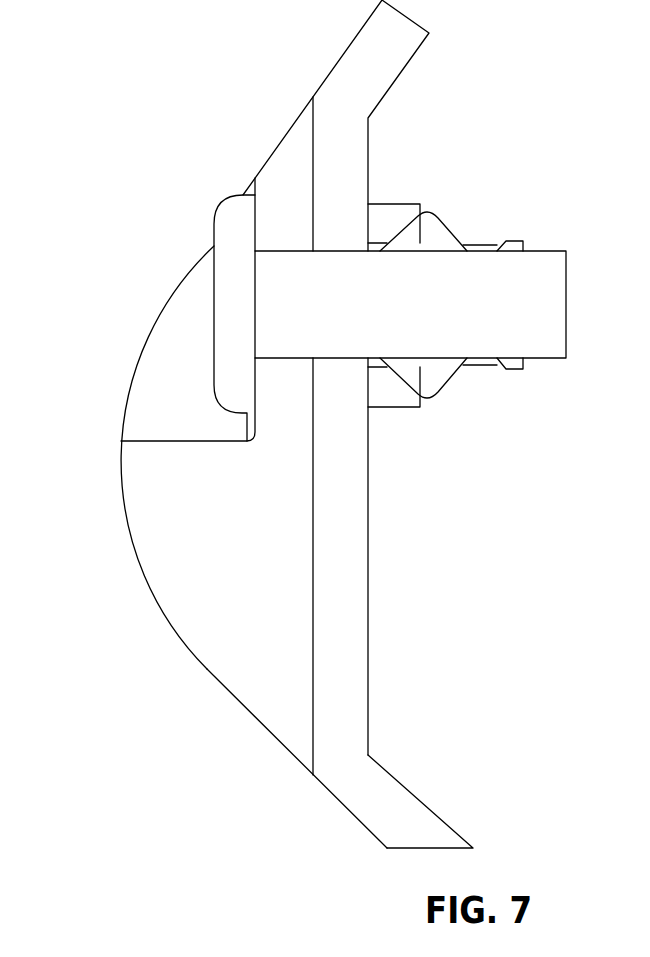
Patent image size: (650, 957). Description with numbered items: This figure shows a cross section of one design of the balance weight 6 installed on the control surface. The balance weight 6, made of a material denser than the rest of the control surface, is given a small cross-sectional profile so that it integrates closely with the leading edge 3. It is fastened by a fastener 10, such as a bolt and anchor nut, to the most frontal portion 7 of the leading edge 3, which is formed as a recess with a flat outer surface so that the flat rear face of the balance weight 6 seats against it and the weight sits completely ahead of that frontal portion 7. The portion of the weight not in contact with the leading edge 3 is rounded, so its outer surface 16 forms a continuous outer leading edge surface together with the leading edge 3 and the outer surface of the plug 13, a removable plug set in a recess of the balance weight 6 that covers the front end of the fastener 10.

The leading edge 3 is at (408, 817).
The balance weight 6 is at (168, 527).
The most frontal portion 7 is at (348, 565).
The fastener 10 is at (427, 333).
The plug 13 is at (190, 358).
The outer surface 16 is at (213, 678).